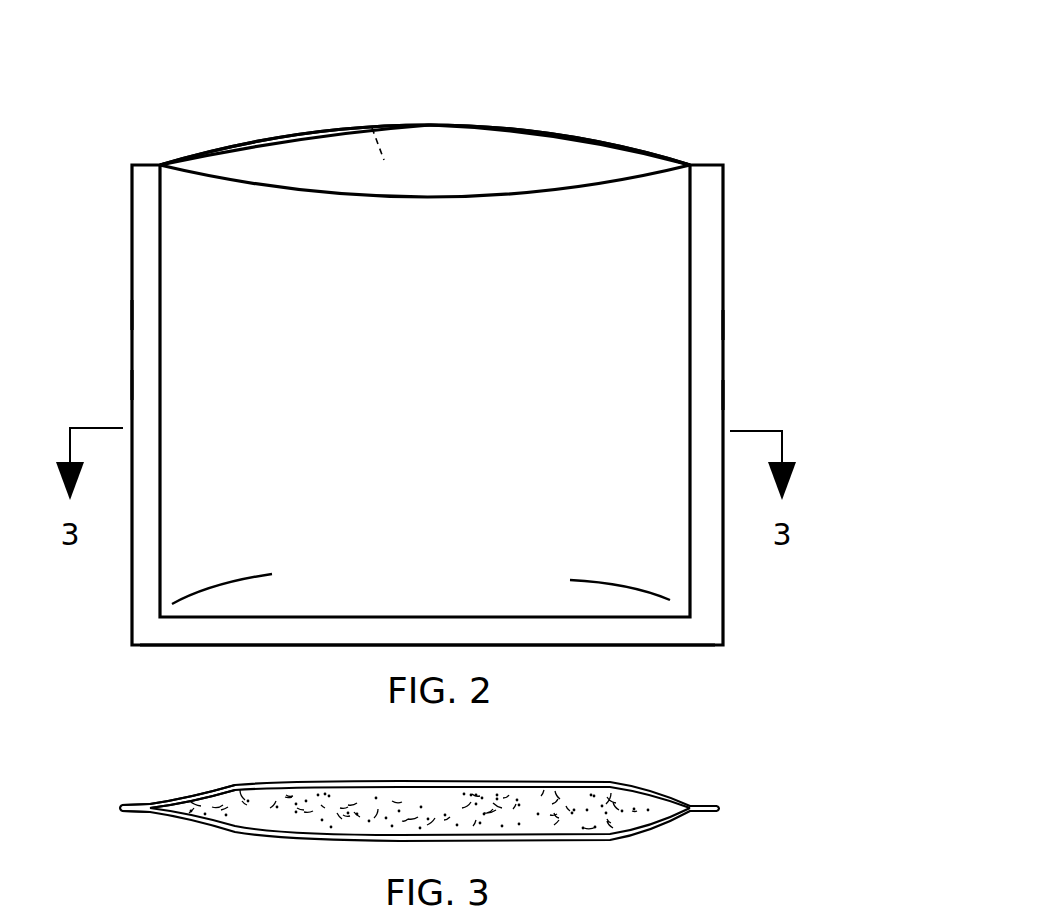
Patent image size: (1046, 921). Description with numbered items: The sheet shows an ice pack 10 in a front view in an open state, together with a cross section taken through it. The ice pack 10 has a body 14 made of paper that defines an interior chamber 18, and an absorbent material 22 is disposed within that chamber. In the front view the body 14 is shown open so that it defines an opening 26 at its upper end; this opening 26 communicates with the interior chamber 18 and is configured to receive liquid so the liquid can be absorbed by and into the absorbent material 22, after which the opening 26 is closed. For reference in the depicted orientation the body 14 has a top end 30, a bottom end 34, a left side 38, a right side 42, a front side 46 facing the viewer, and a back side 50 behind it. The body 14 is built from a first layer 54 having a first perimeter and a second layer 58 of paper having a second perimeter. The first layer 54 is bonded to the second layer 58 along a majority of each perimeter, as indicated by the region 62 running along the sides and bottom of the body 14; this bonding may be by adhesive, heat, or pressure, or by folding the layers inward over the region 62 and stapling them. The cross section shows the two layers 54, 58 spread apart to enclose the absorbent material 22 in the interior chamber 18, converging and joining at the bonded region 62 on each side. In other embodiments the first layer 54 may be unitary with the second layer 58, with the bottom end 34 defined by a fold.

In FIG. 2, the ice pack 10 is at (806, 114).
In FIG. 2, the body 14 is at (663, 302).
In FIG. 3, the body 14 is at (645, 785).
In FIG. 2, the interior chamber 18 is at (274, 148).
In FIG. 3, the interior chamber 18 is at (228, 795).
In FIG. 3, the absorbent material 22 is at (597, 820).
In FIG. 2, the opening 26 is at (458, 140).
In FIG. 2, the top end 30 is at (598, 140).
In FIG. 2, the bottom end 34 is at (622, 646).
In FIG. 2, the left side 38 is at (132, 315).
In FIG. 2, the right side 42 is at (725, 322).
In FIG. 2, the front side 46 is at (450, 356).
In FIG. 2, the back side 50 is at (368, 120).
In FIG. 2, the first layer 54 is at (510, 195).
In FIG. 3, the first layer 54 is at (523, 840).
In FIG. 2, the second layer 58 is at (517, 128).
In FIG. 3, the second layer 58 is at (523, 782).
In FIG. 2, the region 62 is at (145, 382).
In FIG. 3, the region 62 is at (132, 813).